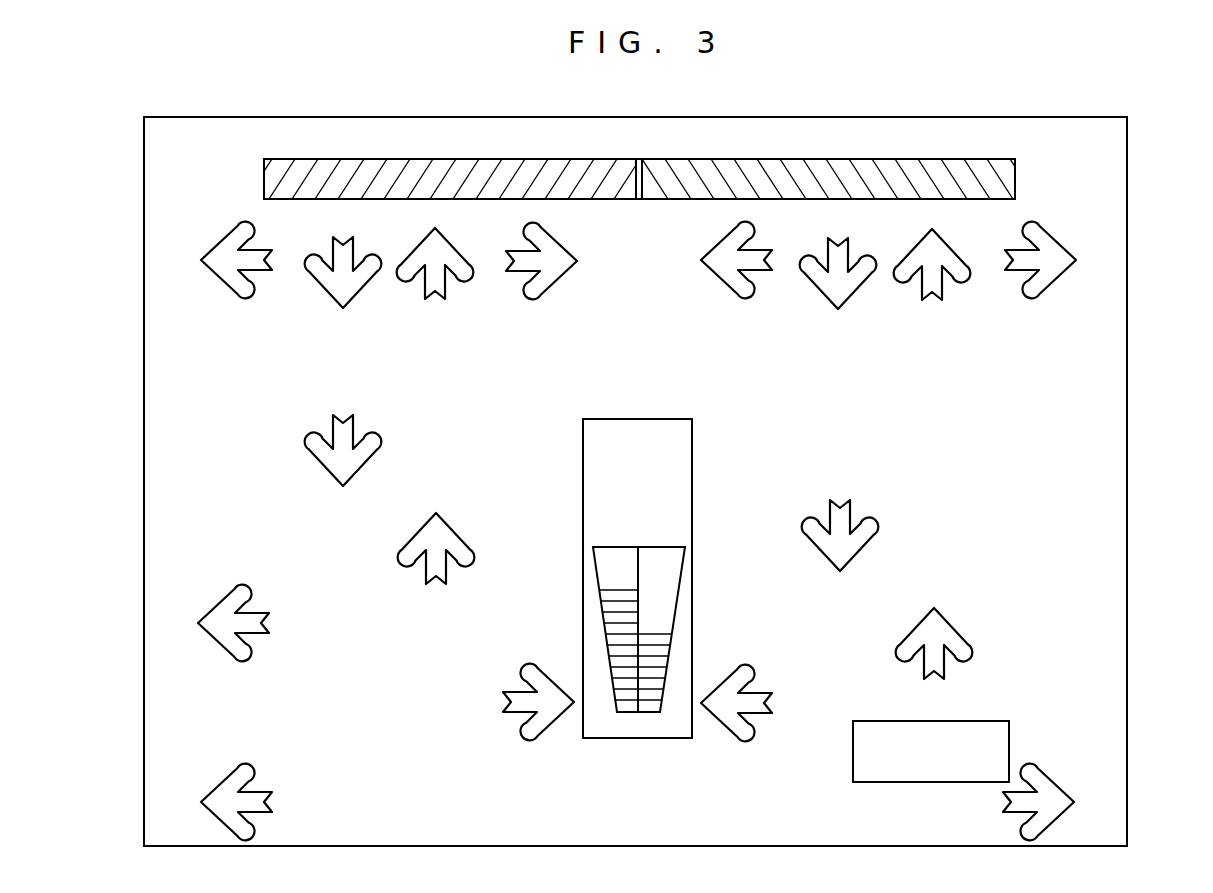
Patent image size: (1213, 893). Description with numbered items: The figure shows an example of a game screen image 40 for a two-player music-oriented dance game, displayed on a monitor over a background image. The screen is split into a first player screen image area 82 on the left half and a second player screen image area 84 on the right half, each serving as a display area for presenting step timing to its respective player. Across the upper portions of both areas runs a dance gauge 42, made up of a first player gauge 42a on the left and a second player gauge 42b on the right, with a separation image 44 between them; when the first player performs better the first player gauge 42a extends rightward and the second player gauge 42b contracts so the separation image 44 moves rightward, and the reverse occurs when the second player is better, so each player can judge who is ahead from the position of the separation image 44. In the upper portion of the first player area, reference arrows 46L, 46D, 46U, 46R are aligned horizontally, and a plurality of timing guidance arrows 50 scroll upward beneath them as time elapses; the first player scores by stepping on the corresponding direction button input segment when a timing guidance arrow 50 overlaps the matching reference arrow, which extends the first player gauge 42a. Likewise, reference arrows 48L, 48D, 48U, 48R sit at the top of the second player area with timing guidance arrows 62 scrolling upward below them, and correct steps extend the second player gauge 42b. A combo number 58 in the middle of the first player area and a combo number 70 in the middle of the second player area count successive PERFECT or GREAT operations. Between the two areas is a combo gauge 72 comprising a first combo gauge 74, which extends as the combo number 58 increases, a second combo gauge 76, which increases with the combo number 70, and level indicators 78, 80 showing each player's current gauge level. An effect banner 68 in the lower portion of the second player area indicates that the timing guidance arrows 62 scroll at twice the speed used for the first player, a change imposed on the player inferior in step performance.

The game screen image 40 is at (1128, 390).
The dance gauge 42 is at (666, 135).
The first player gauge 42a is at (527, 158).
The second player gauge 42b is at (826, 158).
The separation image 44 is at (638, 158).
The reference arrow 46L is at (222, 285).
The reference arrow 46D is at (360, 290).
The reference arrow 46U is at (450, 290).
The reference arrow 46R is at (550, 287).
The reference arrow 48L is at (727, 285).
The reference arrow 48D is at (820, 287).
The reference arrow 48U is at (942, 288).
The reference arrow 48R is at (1060, 278).
The timing guidance arrow 50 is at (353, 423).
The timing guidance arrow 62 is at (850, 508).
The combo number 58 is at (362, 624).
The combo number 70 is at (863, 624).
The effect banner 68 is at (970, 722).
The combo gauge 72 is at (637, 612).
The first combo gauge 74 is at (593, 573).
The second combo gauge 76 is at (677, 607).
The level indicator 78 is at (594, 509).
The level indicator 80 is at (679, 531).
The first player screen image area 82 is at (490, 471).
The second player screen image area 84 is at (790, 462).